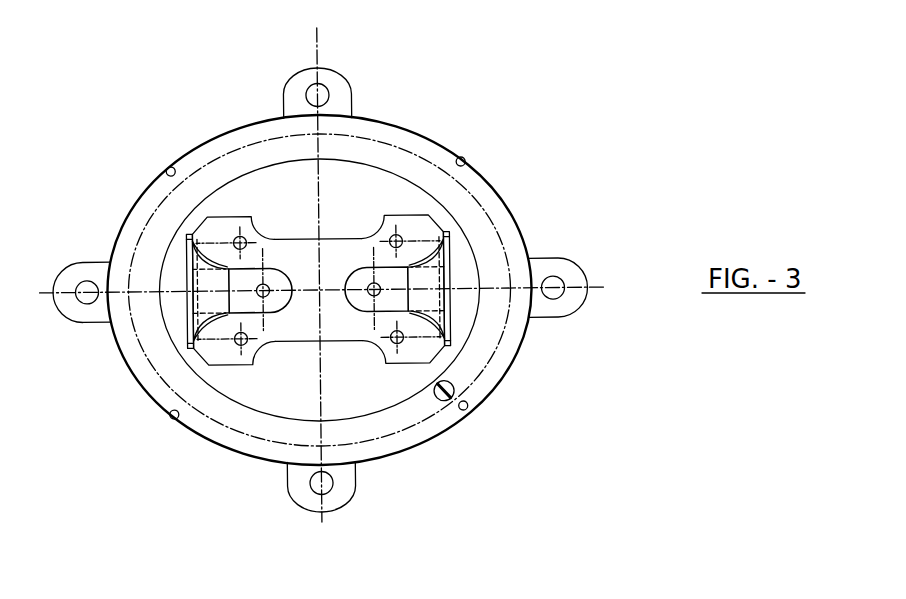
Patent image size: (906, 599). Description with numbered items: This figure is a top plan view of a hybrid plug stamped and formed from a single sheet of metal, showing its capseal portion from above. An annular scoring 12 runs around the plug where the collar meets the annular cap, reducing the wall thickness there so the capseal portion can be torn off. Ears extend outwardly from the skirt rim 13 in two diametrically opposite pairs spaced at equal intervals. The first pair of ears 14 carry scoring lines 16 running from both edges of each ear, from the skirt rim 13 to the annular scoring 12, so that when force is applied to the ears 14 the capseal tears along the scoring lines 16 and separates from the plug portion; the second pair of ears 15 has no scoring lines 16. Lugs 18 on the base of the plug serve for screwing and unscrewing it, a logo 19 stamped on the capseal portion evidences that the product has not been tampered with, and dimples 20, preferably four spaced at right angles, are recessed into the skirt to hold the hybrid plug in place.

The annular scoring 12 is at (222, 439).
The skirt rim 13 is at (532, 351).
The ears 14 is at (353, 62).
The second pair of ears 15 is at (589, 250).
The scoring lines 16 is at (361, 112).
The lugs 18 is at (191, 364).
The logo 19 is at (474, 401).
The dimples 20 is at (472, 156).